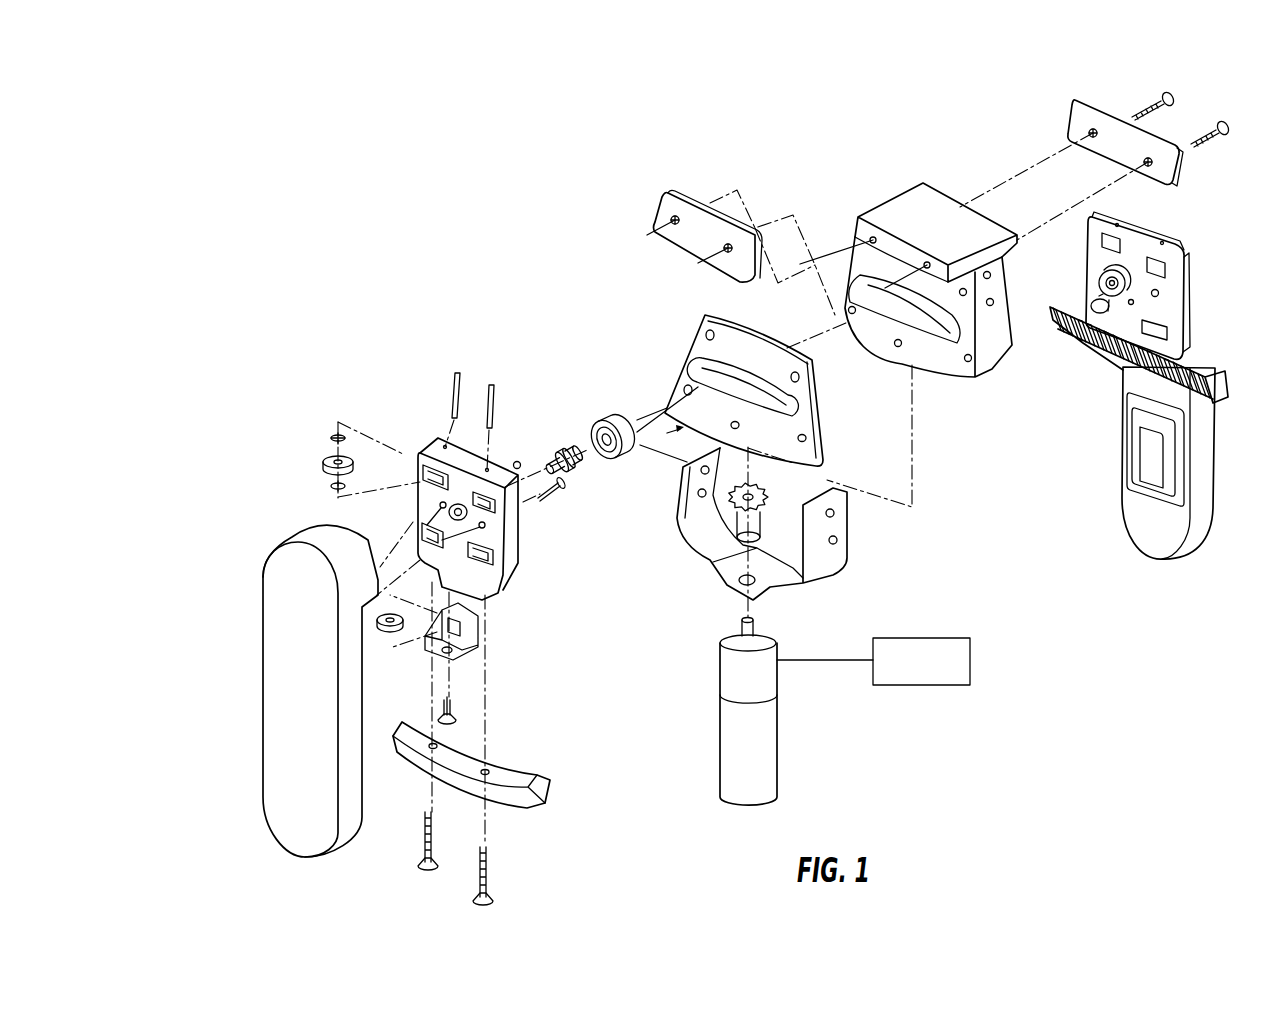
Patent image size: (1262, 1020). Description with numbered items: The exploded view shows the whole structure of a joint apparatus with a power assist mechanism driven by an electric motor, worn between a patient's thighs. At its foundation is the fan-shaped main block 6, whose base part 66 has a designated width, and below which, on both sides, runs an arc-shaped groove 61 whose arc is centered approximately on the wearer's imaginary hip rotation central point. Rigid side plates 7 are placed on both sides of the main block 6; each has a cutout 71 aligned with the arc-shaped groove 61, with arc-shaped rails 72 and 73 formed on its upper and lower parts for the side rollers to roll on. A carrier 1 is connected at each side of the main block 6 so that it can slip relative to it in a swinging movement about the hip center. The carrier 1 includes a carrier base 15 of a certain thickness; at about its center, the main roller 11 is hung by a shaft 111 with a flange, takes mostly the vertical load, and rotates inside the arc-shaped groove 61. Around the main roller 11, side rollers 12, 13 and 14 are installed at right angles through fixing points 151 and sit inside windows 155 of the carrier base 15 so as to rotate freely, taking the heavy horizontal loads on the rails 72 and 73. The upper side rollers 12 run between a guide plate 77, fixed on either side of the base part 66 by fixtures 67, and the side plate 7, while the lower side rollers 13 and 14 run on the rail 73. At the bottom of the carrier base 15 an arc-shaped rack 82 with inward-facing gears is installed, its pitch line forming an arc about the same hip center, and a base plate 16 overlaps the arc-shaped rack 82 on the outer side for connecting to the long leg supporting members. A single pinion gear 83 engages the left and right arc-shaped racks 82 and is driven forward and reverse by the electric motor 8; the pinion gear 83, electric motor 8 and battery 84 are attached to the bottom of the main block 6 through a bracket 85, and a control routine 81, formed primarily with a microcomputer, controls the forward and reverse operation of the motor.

The carrier 1 is at (430, 386).
The fixing points 151 is at (491, 385).
The side rollers 12 is at (323, 460).
The base plate 16 is at (303, 533).
The shaft 111 is at (555, 450).
The main roller 11 is at (607, 416).
The windows 155 is at (493, 557).
The carrier base 15 is at (511, 577).
The side roller 14 is at (378, 633).
The side roller 13 is at (1168, 334).
The arc-shaped rack 82 is at (513, 773).
The guide plate 77 is at (663, 207).
The side plate 7 is at (680, 351).
The arc-shaped rail 72 is at (752, 361).
The cutout 71 is at (787, 407).
The arc-shaped rail 73 is at (668, 448).
The main block 6 is at (897, 193).
The base part 66 is at (862, 228).
The arc-shaped groove 61 is at (940, 336).
The fixtures 67 is at (1143, 112).
The pinion gear 83 is at (777, 479).
The bracket 85 is at (828, 568).
The control routine 81 is at (927, 638).
The electric motor 8 is at (770, 677).
The battery 84 is at (772, 760).